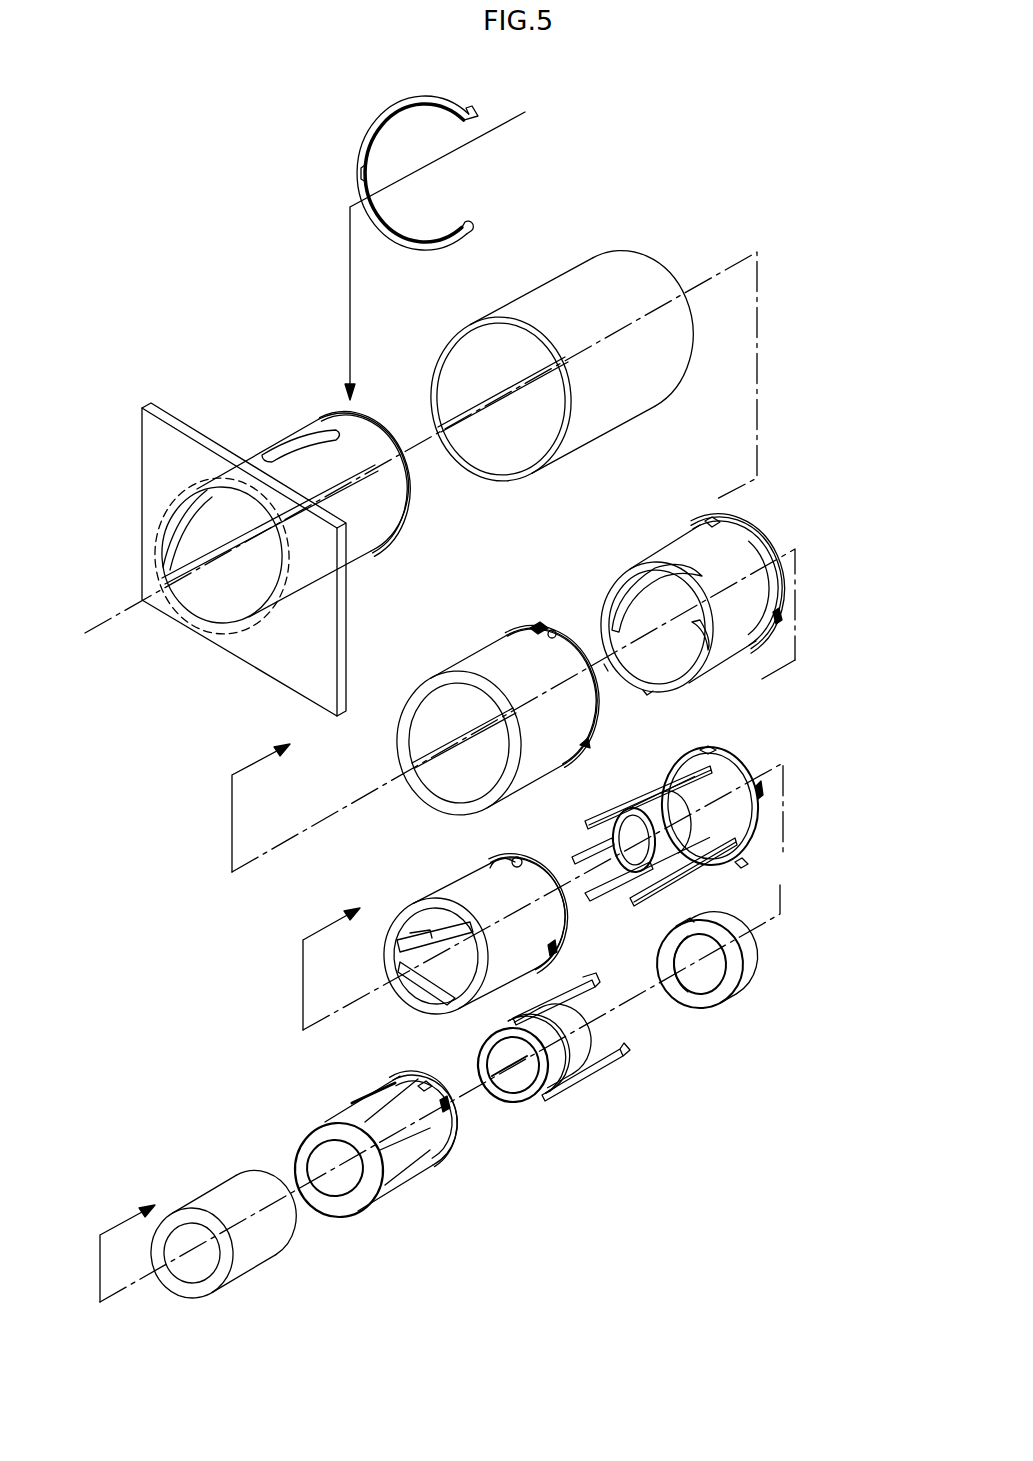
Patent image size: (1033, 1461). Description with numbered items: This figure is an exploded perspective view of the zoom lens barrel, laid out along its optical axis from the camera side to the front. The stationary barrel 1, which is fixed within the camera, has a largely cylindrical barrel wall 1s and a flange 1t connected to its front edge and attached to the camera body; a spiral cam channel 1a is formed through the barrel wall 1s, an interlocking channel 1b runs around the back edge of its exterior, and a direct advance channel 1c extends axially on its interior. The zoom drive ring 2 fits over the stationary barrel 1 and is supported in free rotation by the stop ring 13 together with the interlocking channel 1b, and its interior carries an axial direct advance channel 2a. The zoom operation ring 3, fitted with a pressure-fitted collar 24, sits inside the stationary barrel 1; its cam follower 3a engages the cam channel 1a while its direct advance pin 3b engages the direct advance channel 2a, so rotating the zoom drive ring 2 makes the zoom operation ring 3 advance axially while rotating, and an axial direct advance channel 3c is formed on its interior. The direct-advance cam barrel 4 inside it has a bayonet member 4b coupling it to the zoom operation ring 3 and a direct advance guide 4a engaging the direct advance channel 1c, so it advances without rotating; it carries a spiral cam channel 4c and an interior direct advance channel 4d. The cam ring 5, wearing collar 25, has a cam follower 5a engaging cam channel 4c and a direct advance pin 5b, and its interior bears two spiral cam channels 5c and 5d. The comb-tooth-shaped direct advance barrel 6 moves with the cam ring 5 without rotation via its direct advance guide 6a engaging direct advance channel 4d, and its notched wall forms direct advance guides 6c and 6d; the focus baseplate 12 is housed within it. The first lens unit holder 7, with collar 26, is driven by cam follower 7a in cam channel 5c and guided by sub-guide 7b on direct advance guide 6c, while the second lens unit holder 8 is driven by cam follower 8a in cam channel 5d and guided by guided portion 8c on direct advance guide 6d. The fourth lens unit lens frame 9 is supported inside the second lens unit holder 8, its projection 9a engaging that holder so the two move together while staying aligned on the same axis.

The stationary barrel 1 is at (288, 526).
The cam channel 1a is at (300, 425).
The interlocking channel 1b is at (376, 418).
The direct advance channel 1c is at (197, 618).
The barrel wall 1s is at (385, 514).
The flange 1t is at (323, 615).
The zoom drive ring 2 is at (559, 333).
The direct advance channel 2a is at (478, 442).
The zoom operation ring 3 is at (525, 656).
The cam follower 3a is at (557, 628).
The direct advance pin 3b is at (534, 620).
The direct advance channel 3c is at (428, 776).
The direct-advance cam barrel 4 is at (725, 582).
The direct advance guide 4a is at (712, 518).
The bayonet member 4b is at (680, 560).
The cam channel 4c is at (780, 612).
The direct advance channel 4d is at (646, 660).
The cam ring 5 is at (496, 877).
The cam follower 5a is at (490, 862).
The direct advance pin 5b is at (535, 856).
The first cam channel 5c is at (410, 1010).
The second cam channel 5d is at (403, 926).
The direct advance barrel 6 is at (709, 800).
The direct advance guide 6a is at (709, 750).
The direct advance guide 6c is at (762, 789).
The direct advance guide 6d is at (748, 862).
The first lens unit holder 7 is at (409, 1134).
The cam follower 7a is at (450, 1106).
The sub-guide 7b is at (425, 1084).
The second lens unit holder 8 is at (578, 1025).
The cam follower 8a is at (590, 980).
The guided portion 8c is at (600, 1002).
The fourth lens unit lens frame 9 is at (706, 984).
The projection 9a is at (694, 925).
The focus baseplate 12 is at (610, 800).
The stop ring 13 is at (358, 134).
The collar 24 is at (474, 730).
The collar 25 is at (441, 957).
The collar 26 is at (282, 1262).